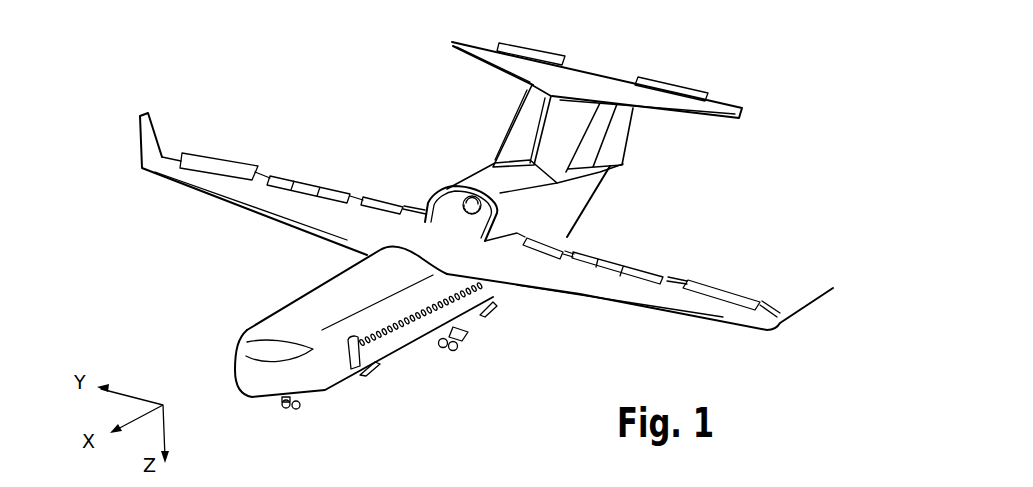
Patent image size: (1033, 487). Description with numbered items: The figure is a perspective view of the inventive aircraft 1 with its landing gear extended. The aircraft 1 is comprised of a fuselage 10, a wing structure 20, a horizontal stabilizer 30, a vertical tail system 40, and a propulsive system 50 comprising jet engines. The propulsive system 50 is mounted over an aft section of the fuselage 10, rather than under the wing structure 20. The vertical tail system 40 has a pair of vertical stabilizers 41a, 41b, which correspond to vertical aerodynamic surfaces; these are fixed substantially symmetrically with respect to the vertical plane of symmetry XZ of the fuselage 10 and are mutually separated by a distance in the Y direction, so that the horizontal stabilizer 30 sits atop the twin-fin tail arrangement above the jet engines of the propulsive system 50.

The aircraft 1 is at (193, 317).
The fuselage 10 is at (320, 278).
The wing structure 20 is at (600, 320).
The horizontal stabilizer 30 is at (691, 71).
The vertical tail system 40 is at (632, 188).
The vertical stabilizer 41a is at (523, 125).
The vertical stabilizer 41b is at (602, 128).
The propulsive system 50 is at (442, 159).